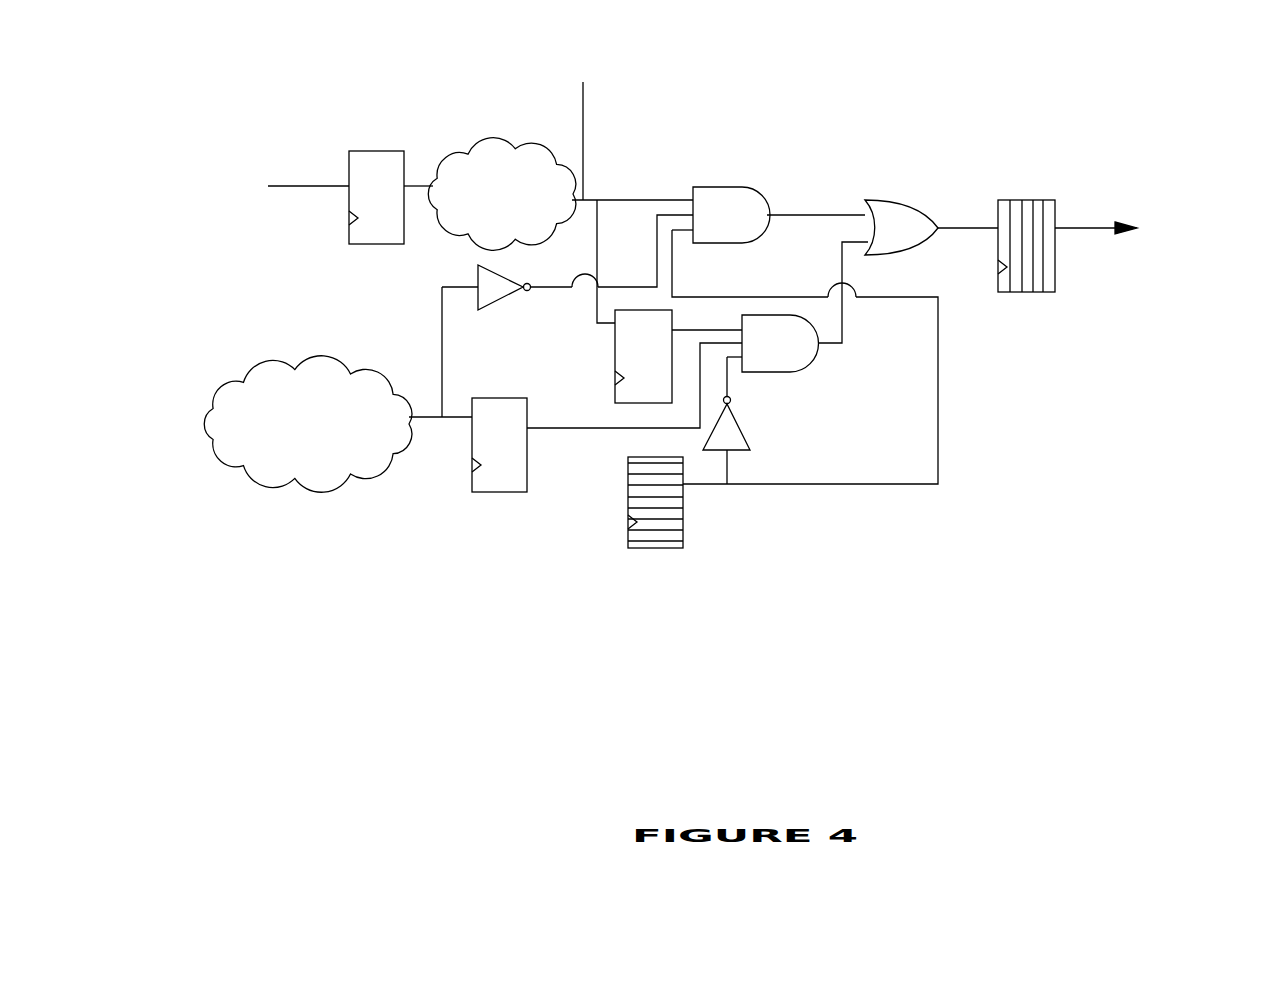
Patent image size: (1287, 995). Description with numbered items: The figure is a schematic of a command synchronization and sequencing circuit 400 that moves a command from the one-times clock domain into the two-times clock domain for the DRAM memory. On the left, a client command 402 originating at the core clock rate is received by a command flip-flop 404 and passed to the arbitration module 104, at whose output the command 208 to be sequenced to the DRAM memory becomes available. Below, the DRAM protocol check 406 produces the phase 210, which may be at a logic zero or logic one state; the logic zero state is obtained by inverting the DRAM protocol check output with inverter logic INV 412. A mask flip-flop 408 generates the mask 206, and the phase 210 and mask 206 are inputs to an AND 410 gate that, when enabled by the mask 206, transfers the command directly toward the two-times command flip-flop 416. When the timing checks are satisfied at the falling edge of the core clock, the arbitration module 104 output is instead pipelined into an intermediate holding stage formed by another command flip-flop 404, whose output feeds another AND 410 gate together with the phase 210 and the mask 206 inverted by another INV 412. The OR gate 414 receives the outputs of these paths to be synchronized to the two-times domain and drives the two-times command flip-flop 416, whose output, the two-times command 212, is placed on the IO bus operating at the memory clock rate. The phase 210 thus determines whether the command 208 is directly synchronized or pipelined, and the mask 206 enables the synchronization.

The command synchronization and sequencing circuit 400 is at (938, 634).
The client command 402 is at (312, 186).
The command flip-flop 404 is at (376, 244).
The arbitration module 104 is at (501, 194).
The command 208 is at (605, 113).
The AND gate 410 is at (723, 187).
The inverter logic INV 412 is at (500, 296).
The OR gate 414 is at (893, 200).
The 2x command flip-flop 416 is at (1032, 292).
The 2x command 212 is at (1088, 228).
The DRAM protocol check 406 is at (308, 424).
The phase 210 is at (427, 417).
The mask 206 is at (698, 484).
The mask flip-flop 408 is at (655, 548).